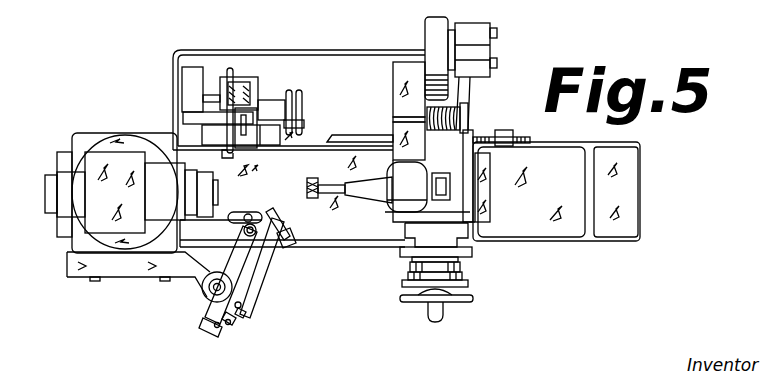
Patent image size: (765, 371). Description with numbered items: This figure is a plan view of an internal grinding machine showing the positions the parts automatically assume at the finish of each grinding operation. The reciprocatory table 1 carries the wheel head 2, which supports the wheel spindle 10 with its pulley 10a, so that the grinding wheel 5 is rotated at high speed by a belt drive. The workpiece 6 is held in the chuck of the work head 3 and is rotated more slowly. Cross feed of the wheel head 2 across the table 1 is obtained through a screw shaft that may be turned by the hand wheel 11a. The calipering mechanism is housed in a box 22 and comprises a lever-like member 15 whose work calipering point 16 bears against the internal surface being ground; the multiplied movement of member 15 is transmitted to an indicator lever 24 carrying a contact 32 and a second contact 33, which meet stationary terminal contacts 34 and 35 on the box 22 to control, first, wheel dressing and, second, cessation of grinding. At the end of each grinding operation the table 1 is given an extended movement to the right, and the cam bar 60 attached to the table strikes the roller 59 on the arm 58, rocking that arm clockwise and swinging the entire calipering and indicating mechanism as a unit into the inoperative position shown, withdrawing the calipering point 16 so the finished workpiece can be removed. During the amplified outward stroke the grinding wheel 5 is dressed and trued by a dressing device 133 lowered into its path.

The reciprocatory table 1 is at (602, 232).
The wheel head 2 is at (402, 212).
The work head 3 is at (92, 218).
The grinding wheel 5 is at (310, 199).
The workpiece 6 is at (212, 185).
The wheel spindle 10 is at (337, 196).
The pulley 10a is at (452, 197).
The hand wheel 11a is at (462, 298).
The member 15 is at (287, 240).
The work calipering point 16 is at (270, 254).
The box 22 is at (208, 318).
The indicator lever 24 is at (241, 307).
The contact 32 is at (233, 321).
The second contact 33 is at (216, 326).
The stationary terminal contact 34 is at (242, 314).
The stationary terminal contact 35 is at (227, 324).
The arm 58 is at (240, 258).
The roller 59 is at (247, 234).
The cam bar 60 is at (269, 212).
The dressing device 133 is at (242, 167).